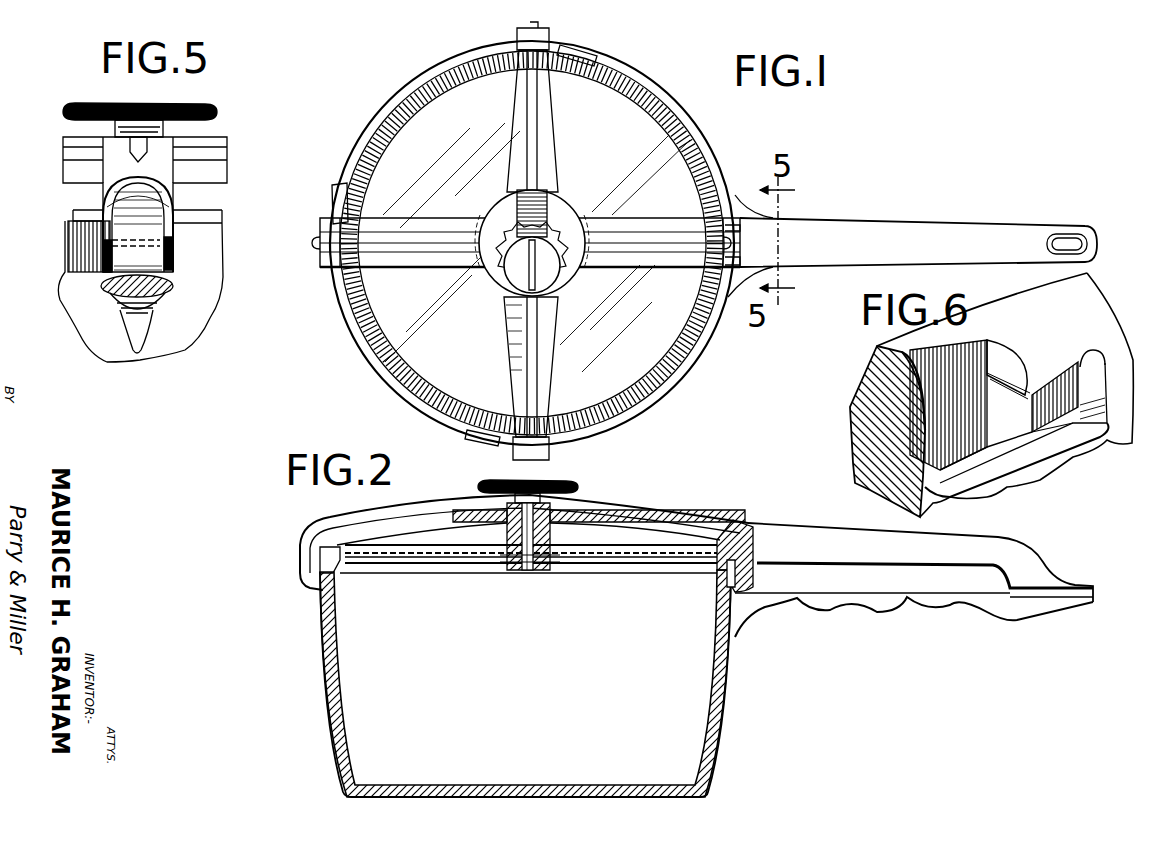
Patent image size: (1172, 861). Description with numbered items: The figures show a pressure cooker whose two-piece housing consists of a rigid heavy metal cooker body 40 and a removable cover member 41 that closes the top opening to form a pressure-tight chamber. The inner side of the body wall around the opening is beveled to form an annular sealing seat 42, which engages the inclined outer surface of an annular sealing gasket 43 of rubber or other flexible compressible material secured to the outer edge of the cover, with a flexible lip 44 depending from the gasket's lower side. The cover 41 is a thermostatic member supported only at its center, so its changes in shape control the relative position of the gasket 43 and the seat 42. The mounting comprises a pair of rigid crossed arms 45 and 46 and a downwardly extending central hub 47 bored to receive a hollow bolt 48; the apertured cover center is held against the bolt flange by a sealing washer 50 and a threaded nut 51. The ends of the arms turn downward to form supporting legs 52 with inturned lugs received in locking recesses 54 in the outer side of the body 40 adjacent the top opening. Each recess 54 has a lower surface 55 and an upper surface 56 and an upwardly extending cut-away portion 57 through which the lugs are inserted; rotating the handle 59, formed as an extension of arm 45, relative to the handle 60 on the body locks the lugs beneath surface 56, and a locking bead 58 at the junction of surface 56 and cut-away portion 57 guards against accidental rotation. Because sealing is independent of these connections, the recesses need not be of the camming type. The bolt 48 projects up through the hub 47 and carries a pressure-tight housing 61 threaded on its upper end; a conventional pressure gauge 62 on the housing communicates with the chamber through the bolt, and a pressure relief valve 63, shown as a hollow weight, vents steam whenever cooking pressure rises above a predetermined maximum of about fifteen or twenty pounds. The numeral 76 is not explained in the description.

In FIG. 5, the cooker body 40 is at (193, 308).
In FIG. 1, the cooker body 40 is at (380, 363).
In FIG. 6, the cooker body 40 is at (1017, 477).
In FIG. 2, the cooker body 40 is at (322, 660).
In FIG. 1, the cover member 41 is at (413, 357).
In FIG. 2, the cover member 41 is at (473, 558).
In FIG. 6, the sealing seat 42 is at (862, 373).
In FIG. 2, the sealing seat 42 is at (330, 583).
In FIG. 1, the sealing gasket 43 is at (417, 385).
In FIG. 2, the sealing gasket 43 is at (330, 547).
In FIG. 2, the flexible lip 44 is at (423, 565).
In FIG. 5, the mounting arm 45 is at (163, 173).
In FIG. 1, the mounting arm 45 is at (660, 267).
In FIG. 2, the mounting arm 45 is at (600, 513).
In FIG. 5, the mounting arm 46 is at (213, 148).
In FIG. 1, the mounting arm 46 is at (523, 93).
In FIG. 2, the central hub 47 is at (563, 557).
In FIG. 2, the bolt 48 is at (480, 530).
In FIG. 2, the sealing washer 50 is at (513, 562).
In FIG. 2, the threaded nut 51 is at (517, 562).
In FIG. 5, the supporting legs 52 is at (138, 230).
In FIG. 6, the locking recesses 54 is at (1093, 390).
In FIG. 6, the lower surface 55 is at (1020, 457).
In FIG. 6, the upper surface 56 is at (1060, 373).
In FIG. 1, the cut-away portion 57 is at (563, 45).
In FIG. 6, the cut-away portion 57 is at (997, 363).
In FIG. 6, the locking bead 58 is at (1027, 393).
In FIG. 5, the handle 59 is at (117, 190).
In FIG. 1, the handle 59 is at (863, 230).
In FIG. 2, the handle 59 is at (787, 547).
In FIG. 5, the handle 60 is at (120, 300).
In FIG. 2, the handle 60 is at (820, 597).
In FIG. 5, the pressure-tight housing 61 is at (200, 103).
In FIG. 1, the pressure-tight housing 61 is at (548, 220).
In FIG. 2, the pressure-tight housing 61 is at (577, 483).
In FIG. 1, the pressure gauge 62 is at (553, 173).
In FIG. 1, the pressure relief valve 63 is at (513, 267).
In FIG. 1, the lower bar arm 76 is at (542, 373).